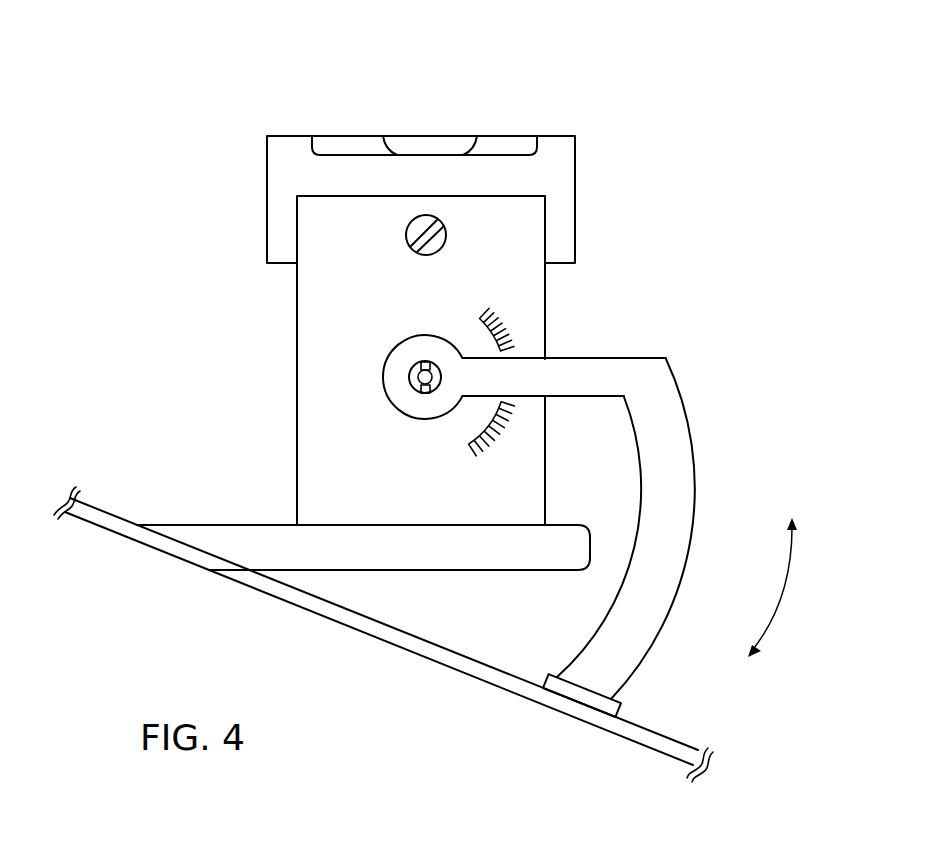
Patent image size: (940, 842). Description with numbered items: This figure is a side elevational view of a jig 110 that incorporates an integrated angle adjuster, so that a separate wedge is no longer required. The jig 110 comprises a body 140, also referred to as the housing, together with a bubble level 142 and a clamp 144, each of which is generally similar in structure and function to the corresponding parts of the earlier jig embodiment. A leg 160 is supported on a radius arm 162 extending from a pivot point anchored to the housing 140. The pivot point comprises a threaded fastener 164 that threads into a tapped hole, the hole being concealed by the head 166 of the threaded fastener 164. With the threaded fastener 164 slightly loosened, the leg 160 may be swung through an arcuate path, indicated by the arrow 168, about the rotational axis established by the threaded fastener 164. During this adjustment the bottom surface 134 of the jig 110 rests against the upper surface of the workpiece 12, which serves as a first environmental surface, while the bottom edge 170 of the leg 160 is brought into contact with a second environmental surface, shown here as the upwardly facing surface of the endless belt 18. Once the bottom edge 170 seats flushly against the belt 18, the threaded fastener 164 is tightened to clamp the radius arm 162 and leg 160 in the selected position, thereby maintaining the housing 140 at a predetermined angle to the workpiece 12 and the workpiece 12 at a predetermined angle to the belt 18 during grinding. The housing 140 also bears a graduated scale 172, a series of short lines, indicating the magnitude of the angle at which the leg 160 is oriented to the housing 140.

The jig 110 is at (193, 100).
The workpiece 12 is at (395, 548).
The endless belt 18 is at (428, 660).
The bottom surface 134 is at (493, 525).
The body 140 is at (265, 335).
The bubble level 142 is at (597, 108).
The clamp 144 is at (455, 242).
The leg 160 is at (673, 520).
The radius arm 162 is at (600, 372).
The threaded fastener 164 is at (410, 376).
The head 166 is at (431, 396).
The arrow 168 is at (786, 583).
The bottom edge 170 is at (583, 693).
The graduated scale 172 is at (486, 477).